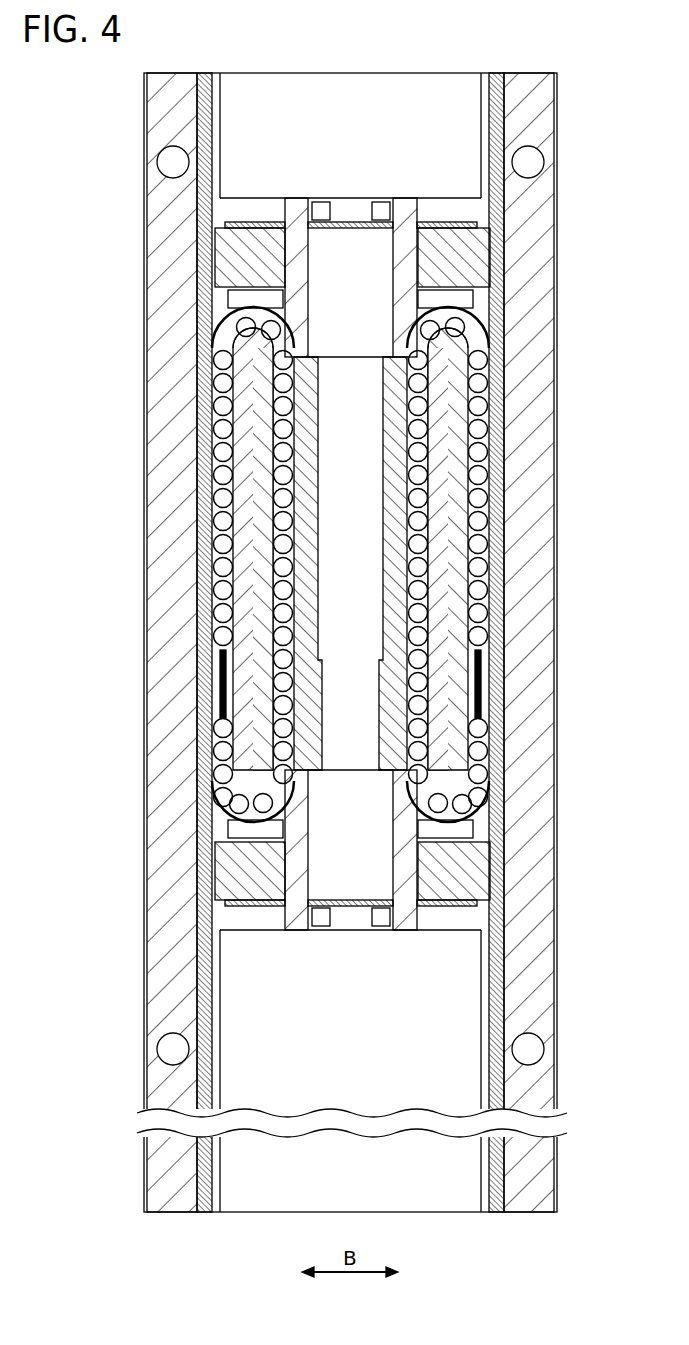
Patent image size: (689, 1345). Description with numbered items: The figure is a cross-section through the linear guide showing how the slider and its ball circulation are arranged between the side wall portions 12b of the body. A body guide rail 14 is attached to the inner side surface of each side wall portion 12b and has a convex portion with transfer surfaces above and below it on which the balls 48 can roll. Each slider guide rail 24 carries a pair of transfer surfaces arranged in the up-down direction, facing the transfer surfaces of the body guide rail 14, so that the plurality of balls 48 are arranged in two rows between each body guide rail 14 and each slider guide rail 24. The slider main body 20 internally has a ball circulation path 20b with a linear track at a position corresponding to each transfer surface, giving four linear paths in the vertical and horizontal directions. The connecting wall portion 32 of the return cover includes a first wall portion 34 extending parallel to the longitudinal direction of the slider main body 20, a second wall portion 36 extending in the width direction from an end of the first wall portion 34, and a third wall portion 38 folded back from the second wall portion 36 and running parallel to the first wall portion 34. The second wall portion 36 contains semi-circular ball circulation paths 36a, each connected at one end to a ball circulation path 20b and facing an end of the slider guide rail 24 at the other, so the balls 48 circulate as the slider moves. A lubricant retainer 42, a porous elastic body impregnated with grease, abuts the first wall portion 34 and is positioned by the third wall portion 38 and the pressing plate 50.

The side wall portion 12b is at (172, 958).
The body guide rail 14 is at (220, 517).
The slider main body 20 is at (350, 563).
The ball circulation path 20b is at (296, 494).
The slider guide rail 24 is at (245, 452).
The connecting wall portion 32 is at (261, 579).
The first wall portion 34 is at (304, 268).
The second wall portion 36 is at (273, 561).
The ball circulation path 36a is at (247, 333).
The third wall portion 38 is at (228, 298).
The lubricant retainer 42 is at (443, 250).
The ball 48 is at (223, 410).
The pressing plate 50 is at (242, 223).